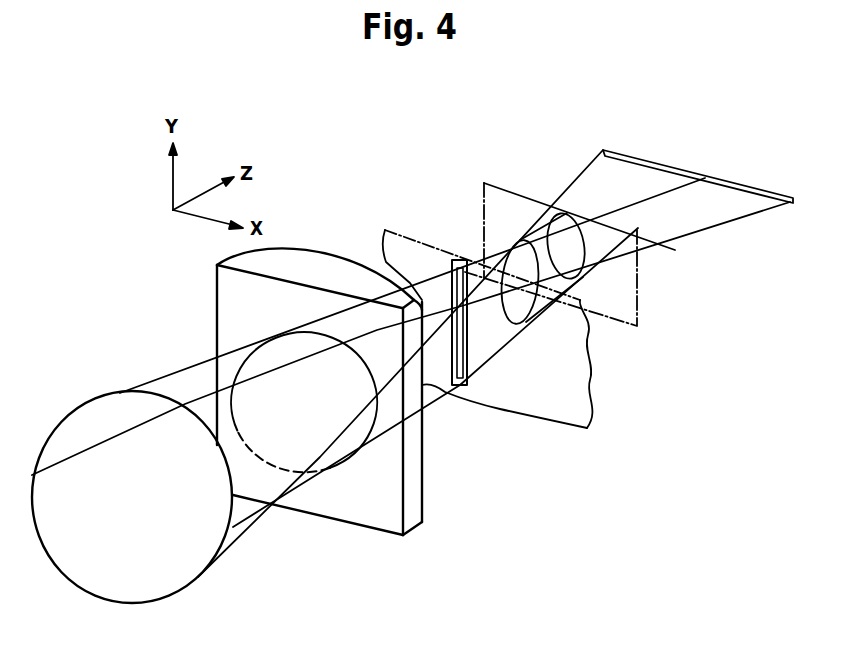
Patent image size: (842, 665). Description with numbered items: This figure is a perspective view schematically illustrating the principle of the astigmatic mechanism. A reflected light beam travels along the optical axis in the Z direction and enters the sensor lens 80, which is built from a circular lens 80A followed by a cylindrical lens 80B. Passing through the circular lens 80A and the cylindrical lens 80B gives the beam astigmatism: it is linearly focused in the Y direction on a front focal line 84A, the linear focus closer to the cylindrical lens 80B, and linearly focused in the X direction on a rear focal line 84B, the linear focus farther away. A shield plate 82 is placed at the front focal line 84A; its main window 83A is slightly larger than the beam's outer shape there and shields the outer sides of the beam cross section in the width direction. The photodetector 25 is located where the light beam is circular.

The sensor lens 80 is at (295, 425).
The circular lens 80A is at (190, 584).
The cylindrical lens 80B is at (423, 522).
The main window 83A is at (458, 258).
The front focal line 84A is at (447, 392).
The rear focal line 84B is at (627, 153).
The shield plate 82 is at (590, 380).
The photodetector 25 is at (637, 297).